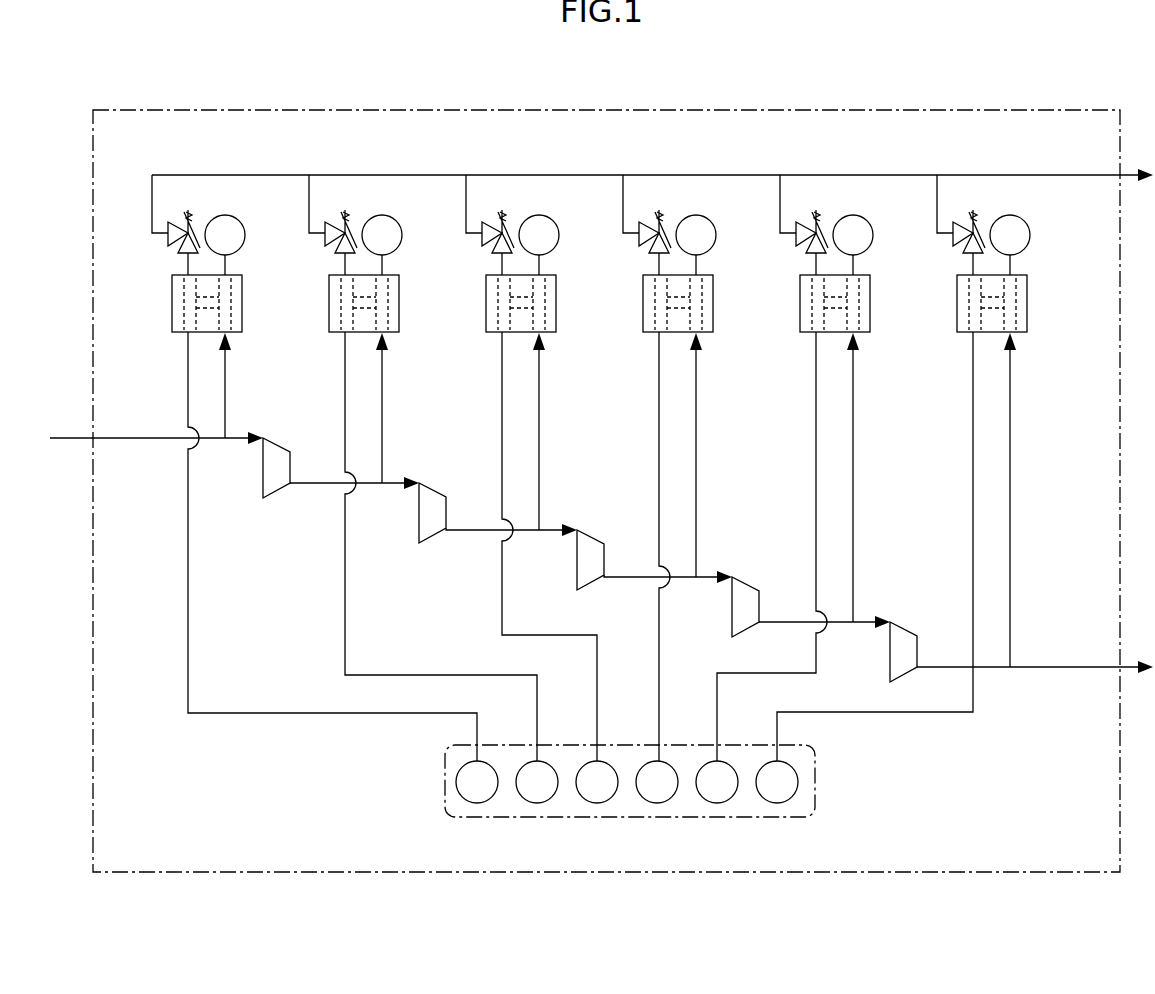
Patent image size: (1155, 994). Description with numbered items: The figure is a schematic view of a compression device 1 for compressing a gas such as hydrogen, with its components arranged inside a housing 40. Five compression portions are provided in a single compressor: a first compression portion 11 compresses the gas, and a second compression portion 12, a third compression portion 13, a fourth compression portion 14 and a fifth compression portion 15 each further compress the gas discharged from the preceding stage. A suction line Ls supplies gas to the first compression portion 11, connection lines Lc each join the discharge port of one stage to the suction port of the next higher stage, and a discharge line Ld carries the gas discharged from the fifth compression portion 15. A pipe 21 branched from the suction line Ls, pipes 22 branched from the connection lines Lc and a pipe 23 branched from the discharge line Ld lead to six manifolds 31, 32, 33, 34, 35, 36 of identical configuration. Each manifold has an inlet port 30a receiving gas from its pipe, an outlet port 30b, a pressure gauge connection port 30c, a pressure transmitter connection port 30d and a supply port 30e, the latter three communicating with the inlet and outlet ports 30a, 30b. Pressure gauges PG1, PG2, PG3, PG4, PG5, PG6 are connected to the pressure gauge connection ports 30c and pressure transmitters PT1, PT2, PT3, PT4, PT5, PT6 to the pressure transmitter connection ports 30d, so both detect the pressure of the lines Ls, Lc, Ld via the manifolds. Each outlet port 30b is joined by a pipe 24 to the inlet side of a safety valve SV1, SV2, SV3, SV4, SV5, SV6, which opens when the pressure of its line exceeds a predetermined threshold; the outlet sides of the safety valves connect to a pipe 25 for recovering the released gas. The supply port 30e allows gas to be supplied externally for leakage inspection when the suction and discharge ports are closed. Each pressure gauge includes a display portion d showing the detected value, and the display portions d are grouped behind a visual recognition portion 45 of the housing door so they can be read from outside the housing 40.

The compression device 1 is at (145, 75).
The housing 40 is at (975, 110).
The pipe 25 is at (412, 175).
The pipe 24 is at (188, 268).
The first compression portion 11 is at (271, 446).
The second compression portion 12 is at (428, 488).
The third compression portion 13 is at (586, 535).
The fourth compression portion 14 is at (742, 582).
The fifth compression portion 15 is at (899, 627).
The pipe 21 is at (227, 390).
The pipe 22 is at (384, 401).
The pipe 23 is at (1012, 417).
The manifold 31 is at (172, 312).
The manifold 32 is at (399, 280).
The manifold 33 is at (556, 280).
The manifold 34 is at (713, 280).
The manifold 35 is at (870, 280).
The manifold 36 is at (1027, 280).
The inlet port 30a is at (233, 333).
The outlet port 30b is at (180, 287).
The pressure gauge connection port 30c is at (180, 335).
The pressure transmitter connection port 30d is at (233, 278).
The supply port 30e is at (238, 298).
The visual recognition portion 45 is at (580, 598).
The display portion d is at (452, 766).
The suction line Ls is at (207, 448).
The connection line Lc is at (370, 490).
The discharge line Ld is at (1035, 693).
The safety valve SV1 is at (196, 230).
The safety valve SV2 is at (353, 230).
The safety valve SV3 is at (510, 230).
The safety valve SV4 is at (667, 230).
The safety valve SV5 is at (824, 230).
The safety valve SV6 is at (981, 230).
The pressure transmitter PT1 is at (240, 222).
The pressure transmitter PT2 is at (397, 222).
The pressure transmitter PT3 is at (554, 222).
The pressure transmitter PT4 is at (711, 222).
The pressure transmitter PT5 is at (868, 222).
The pressure transmitter PT6 is at (1025, 222).
The pressure gauge PG1 is at (477, 803).
The pressure gauge PG2 is at (537, 803).
The pressure gauge PG3 is at (597, 803).
The pressure gauge PG4 is at (657, 803).
The pressure gauge PG5 is at (717, 803).
The pressure gauge PG6 is at (777, 803).